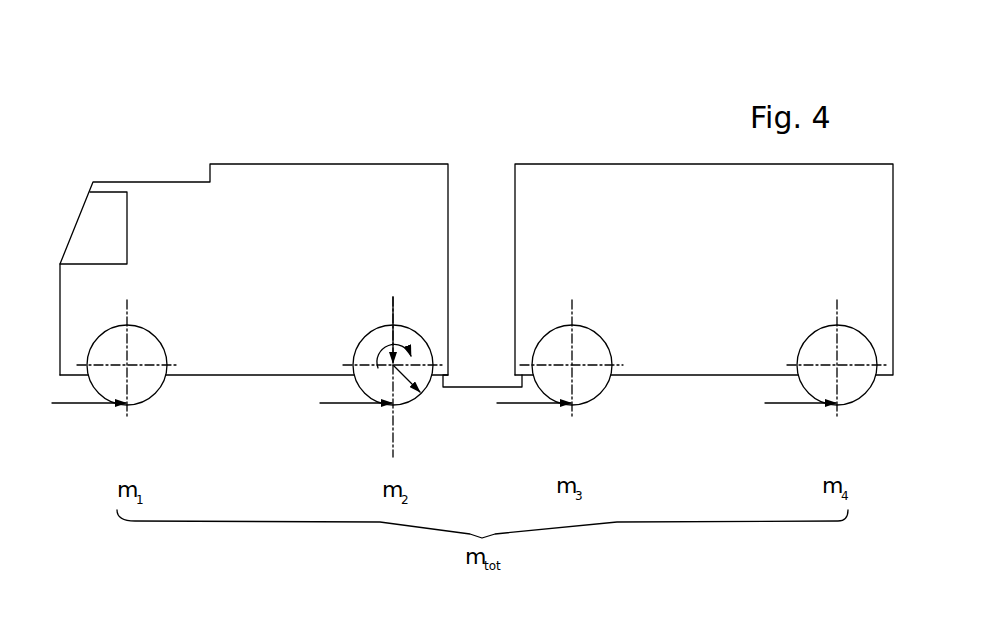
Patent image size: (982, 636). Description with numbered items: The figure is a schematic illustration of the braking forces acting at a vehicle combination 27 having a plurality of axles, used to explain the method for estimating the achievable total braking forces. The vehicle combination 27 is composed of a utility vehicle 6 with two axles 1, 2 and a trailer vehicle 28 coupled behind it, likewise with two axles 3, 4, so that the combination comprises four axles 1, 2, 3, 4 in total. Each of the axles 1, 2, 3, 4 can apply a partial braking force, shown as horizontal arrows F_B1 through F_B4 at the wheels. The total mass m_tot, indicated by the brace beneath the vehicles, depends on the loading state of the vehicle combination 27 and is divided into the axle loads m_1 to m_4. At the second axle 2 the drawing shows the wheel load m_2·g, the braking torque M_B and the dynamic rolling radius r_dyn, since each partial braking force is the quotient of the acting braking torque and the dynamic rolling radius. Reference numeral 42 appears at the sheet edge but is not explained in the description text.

The vehicle combination 27 is at (460, 232).
The utility vehicle 6 is at (291, 259).
The trailer vehicle 28 is at (704, 254).
The axle 1 is at (102, 359).
The axle 2 is at (373, 365).
The axle 3 is at (547, 359).
The axle 4 is at (812, 359).
The control unit 42 is at (729, 632).